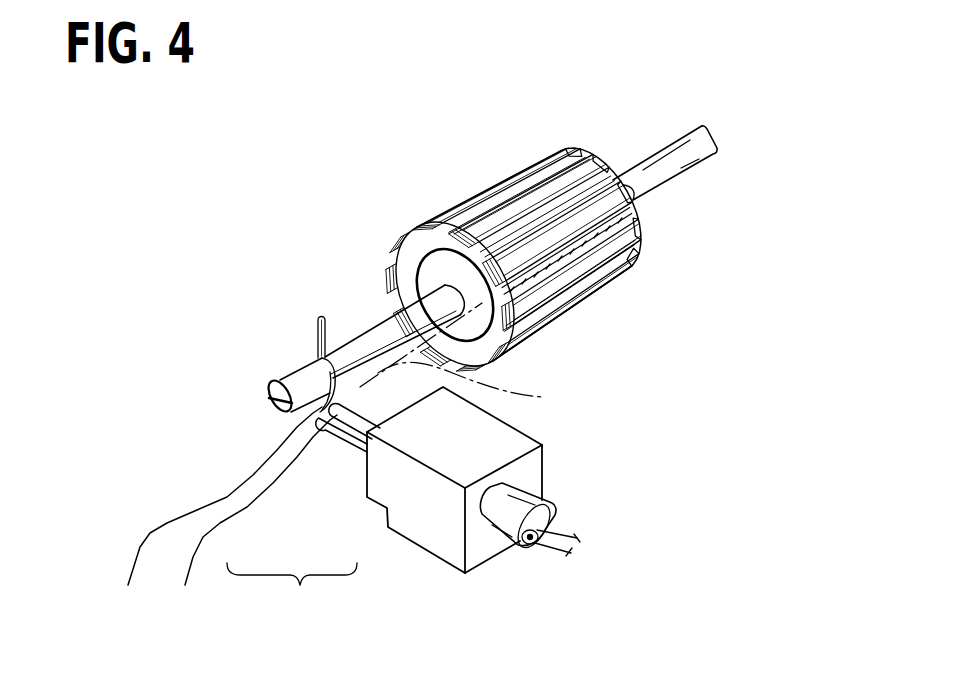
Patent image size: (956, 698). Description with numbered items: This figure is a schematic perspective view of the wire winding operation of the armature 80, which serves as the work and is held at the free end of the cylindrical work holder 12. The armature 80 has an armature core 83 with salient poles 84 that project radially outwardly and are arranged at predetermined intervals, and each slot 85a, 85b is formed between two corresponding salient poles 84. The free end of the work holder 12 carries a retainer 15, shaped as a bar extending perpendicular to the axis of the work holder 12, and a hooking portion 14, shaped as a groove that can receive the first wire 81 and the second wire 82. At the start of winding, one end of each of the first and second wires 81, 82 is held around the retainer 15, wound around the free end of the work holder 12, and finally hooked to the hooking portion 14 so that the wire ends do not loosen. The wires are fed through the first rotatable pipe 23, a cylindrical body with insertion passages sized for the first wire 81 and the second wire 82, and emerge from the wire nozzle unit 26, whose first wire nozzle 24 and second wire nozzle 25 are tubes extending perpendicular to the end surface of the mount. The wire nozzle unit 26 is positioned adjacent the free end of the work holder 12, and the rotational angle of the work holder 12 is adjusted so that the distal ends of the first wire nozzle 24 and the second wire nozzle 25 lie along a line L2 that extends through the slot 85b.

The armature 80 is at (452, 200).
The armature core 83 is at (537, 147).
The salient poles 84 is at (635, 209).
The slot 85a is at (637, 192).
The slot 85b is at (637, 225).
The work holder 12 is at (685, 133).
The hooking portion 14 is at (268, 392).
The retainer 15 is at (317, 328).
The first rotatable pipe 23 is at (510, 527).
The first wire nozzle 24 is at (357, 427).
The second wire nozzle 25 is at (333, 440).
The wire nozzle unit 26 is at (319, 628).
The first wire 81 is at (252, 523).
The second wire 82 is at (212, 519).
The line L2 is at (482, 390).